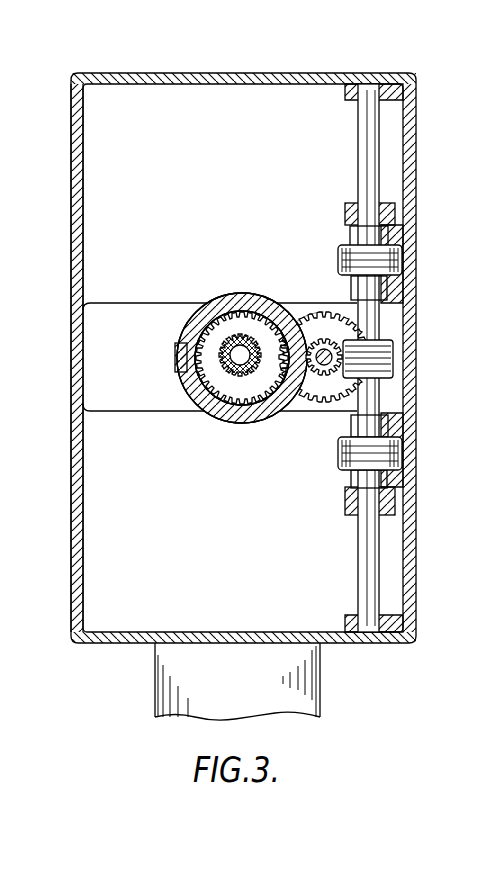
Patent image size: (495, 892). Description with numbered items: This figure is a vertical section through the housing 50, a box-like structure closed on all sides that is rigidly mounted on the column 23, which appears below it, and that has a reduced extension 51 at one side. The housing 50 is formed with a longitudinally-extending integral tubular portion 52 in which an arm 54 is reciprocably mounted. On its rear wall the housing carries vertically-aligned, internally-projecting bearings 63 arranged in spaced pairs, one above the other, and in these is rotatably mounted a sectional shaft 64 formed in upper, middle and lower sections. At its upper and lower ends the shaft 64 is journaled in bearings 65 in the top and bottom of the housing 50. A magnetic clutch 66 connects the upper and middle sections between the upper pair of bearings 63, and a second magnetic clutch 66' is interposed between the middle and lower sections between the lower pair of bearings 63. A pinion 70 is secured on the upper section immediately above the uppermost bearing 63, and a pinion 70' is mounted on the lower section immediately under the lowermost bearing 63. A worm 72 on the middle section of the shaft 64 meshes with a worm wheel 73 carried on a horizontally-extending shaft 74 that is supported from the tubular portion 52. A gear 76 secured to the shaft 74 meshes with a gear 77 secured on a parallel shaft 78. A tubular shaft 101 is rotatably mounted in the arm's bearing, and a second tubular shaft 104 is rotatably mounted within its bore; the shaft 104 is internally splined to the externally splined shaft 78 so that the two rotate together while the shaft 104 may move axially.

The column 23 is at (308, 681).
The housing 50 is at (407, 376).
The reduced extension 51 is at (93, 372).
The tubular portion 52 is at (256, 406).
The arm 54 is at (241, 303).
The bearings 63 is at (351, 238).
The sectional shaft 64 is at (362, 135).
The bearings 65 is at (352, 92).
The magnetic clutch 66 is at (353, 260).
The second magnetic clutch 66' is at (351, 454).
The pinion 70 is at (351, 208).
The pinion 70' is at (349, 506).
The worm 72 is at (394, 360).
The worm wheel 73 is at (327, 366).
The shaft 74 is at (323, 346).
The gear 76 is at (306, 318).
The gear 77 is at (222, 398).
The shaft 78 is at (244, 348).
The tubular shaft 101 is at (262, 360).
The second tubular shaft 104 is at (226, 348).